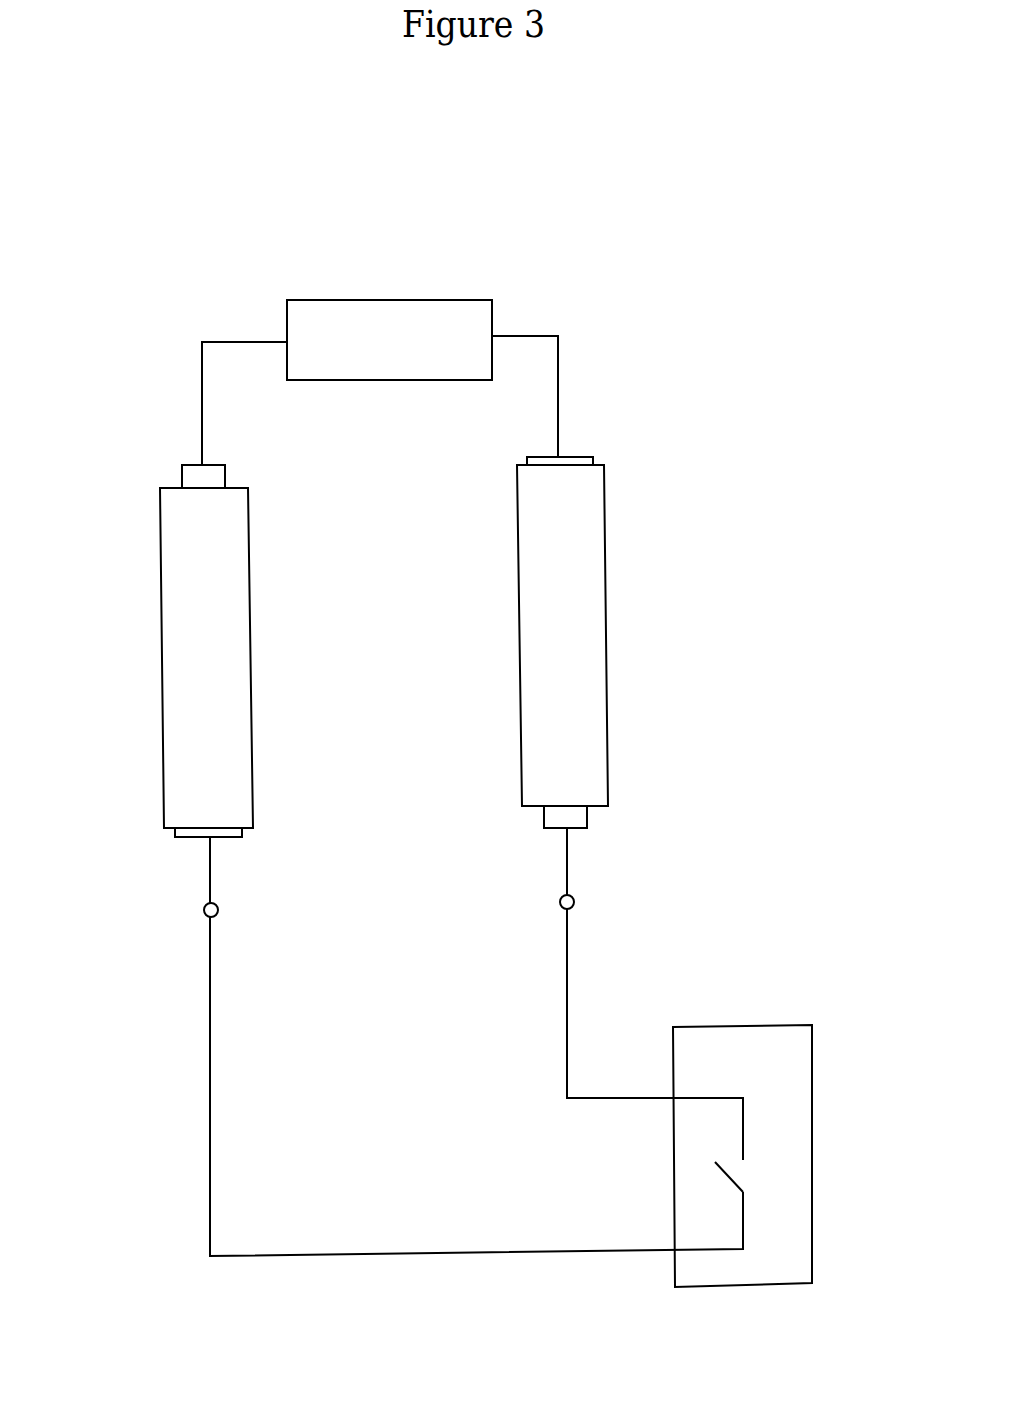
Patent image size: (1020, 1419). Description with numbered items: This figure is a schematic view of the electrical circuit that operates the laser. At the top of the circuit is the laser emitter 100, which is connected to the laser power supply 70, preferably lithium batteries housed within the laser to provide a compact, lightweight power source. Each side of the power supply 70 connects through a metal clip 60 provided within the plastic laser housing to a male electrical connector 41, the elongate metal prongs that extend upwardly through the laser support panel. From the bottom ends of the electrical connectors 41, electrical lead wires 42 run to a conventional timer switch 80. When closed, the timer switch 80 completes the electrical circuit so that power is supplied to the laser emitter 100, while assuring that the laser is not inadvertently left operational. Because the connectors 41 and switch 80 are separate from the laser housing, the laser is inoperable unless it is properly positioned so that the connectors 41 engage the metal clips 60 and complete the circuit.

The laser emitter 100 is at (452, 320).
The laser power supply 70 is at (208, 680).
The metal clip 60 is at (207, 875).
The male electrical connector 41 is at (200, 915).
The electrical lead wire 42 is at (565, 1047).
The timer switch 80 is at (783, 1132).